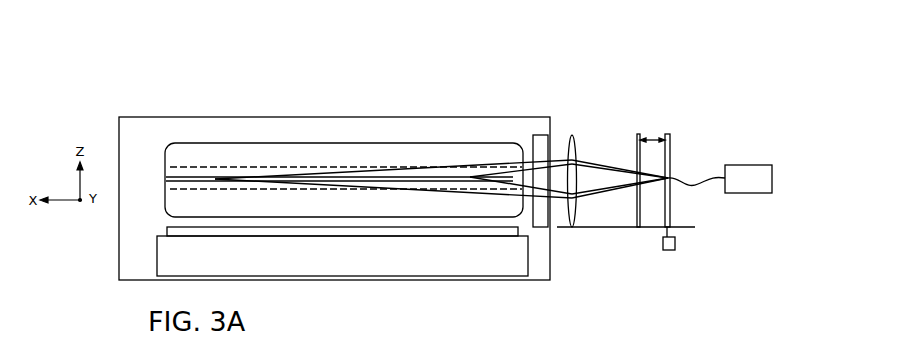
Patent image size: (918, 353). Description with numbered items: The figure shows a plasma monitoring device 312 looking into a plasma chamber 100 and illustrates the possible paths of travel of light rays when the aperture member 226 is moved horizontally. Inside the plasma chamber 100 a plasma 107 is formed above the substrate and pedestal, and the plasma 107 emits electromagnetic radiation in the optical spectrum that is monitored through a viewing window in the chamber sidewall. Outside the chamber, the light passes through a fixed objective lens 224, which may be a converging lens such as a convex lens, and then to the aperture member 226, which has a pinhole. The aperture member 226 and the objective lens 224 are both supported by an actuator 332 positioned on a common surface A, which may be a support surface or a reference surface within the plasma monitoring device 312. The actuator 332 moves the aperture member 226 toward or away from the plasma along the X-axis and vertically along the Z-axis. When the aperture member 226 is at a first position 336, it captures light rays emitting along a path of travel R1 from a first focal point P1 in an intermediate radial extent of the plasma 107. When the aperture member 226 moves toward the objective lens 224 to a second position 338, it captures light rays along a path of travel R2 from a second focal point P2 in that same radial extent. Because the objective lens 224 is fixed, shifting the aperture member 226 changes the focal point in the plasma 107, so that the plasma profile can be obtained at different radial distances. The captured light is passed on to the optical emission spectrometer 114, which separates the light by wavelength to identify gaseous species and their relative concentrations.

The plasma chamber 100 is at (176, 117).
The plasma 107 is at (297, 143).
The optical emission spectrometer 114 is at (752, 165).
The objective lens 224 is at (577, 147).
The aperture member 226 is at (684, 156).
The plasma monitoring device 312 is at (648, 88).
The two-axis actuator 332 is at (675, 243).
The first position 336 is at (658, 220).
The second position 338 is at (631, 220).
The first focal point P1 is at (468, 177).
The second focal point P2 is at (215, 176).
The path of travel R1 is at (520, 193).
The path of travel R2 is at (323, 170).
The common surface A is at (592, 228).